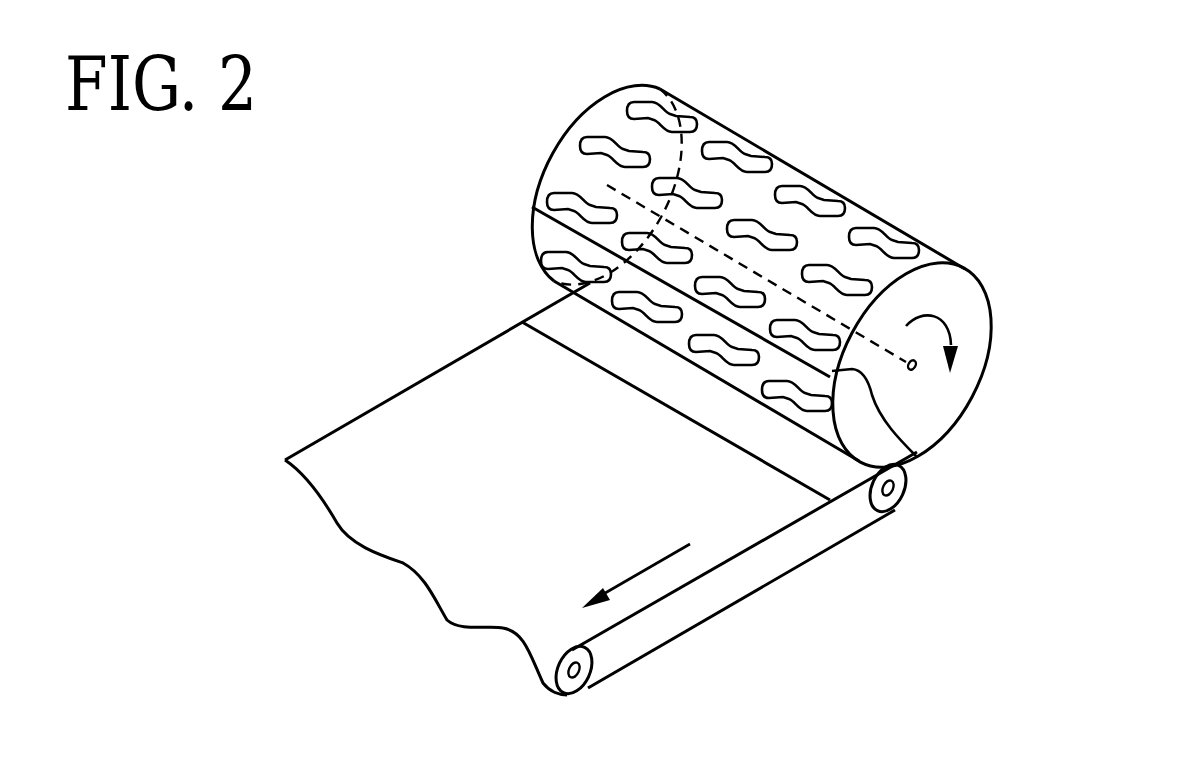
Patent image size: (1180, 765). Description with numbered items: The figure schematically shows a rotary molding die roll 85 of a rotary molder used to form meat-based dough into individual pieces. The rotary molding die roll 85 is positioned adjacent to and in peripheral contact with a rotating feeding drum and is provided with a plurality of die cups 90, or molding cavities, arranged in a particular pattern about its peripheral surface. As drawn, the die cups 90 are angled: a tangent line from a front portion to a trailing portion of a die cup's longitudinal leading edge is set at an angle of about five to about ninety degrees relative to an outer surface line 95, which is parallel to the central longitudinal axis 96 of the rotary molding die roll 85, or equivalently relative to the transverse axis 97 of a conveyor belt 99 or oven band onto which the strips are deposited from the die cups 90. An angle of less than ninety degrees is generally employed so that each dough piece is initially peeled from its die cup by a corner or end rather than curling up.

The rotary molding die roll 85 is at (972, 303).
The die cups 90 is at (572, 204).
The outer surface line 95 is at (917, 457).
The central longitudinal axis 96 is at (914, 370).
The transverse axis 97 is at (803, 473).
The conveyor belt 99 is at (369, 437).